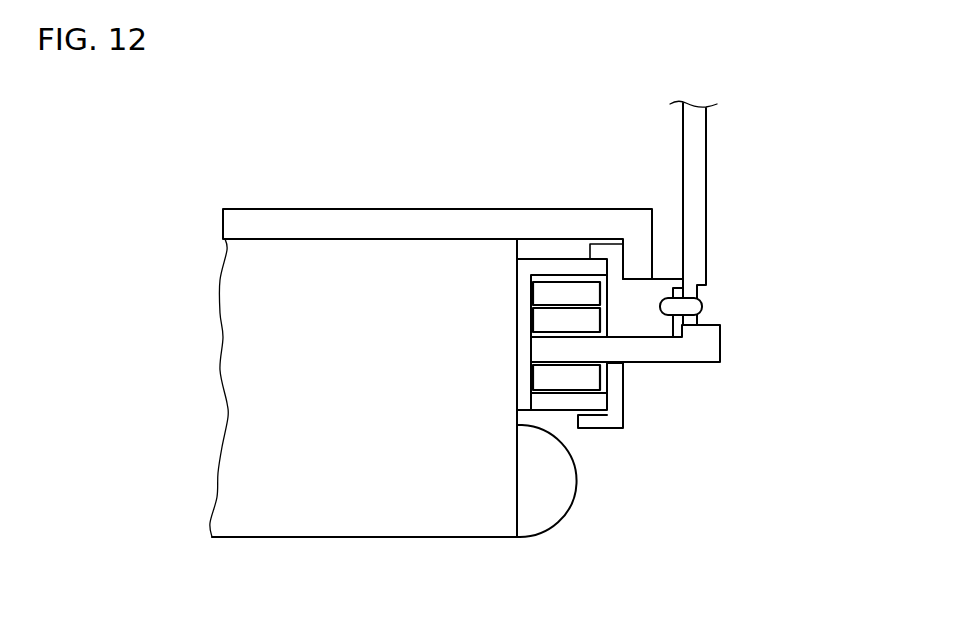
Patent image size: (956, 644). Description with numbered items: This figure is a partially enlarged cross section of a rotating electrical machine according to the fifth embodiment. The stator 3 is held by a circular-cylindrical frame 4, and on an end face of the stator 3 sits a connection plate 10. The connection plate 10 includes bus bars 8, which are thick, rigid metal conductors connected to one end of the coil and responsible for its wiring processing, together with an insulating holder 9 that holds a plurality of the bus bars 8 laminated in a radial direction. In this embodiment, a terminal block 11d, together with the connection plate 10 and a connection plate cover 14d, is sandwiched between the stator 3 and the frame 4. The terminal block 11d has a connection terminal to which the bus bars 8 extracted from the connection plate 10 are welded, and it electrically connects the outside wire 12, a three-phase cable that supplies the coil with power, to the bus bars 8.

The stator 3 is at (330, 538).
The frame 4 is at (258, 208).
The bus bar 8 is at (560, 295).
The insulating holder 9 is at (525, 272).
The connection plate 10 is at (503, 115).
The terminal block 11d is at (668, 278).
The outside wire 12 is at (706, 167).
The connection plate cover 14d is at (623, 385).